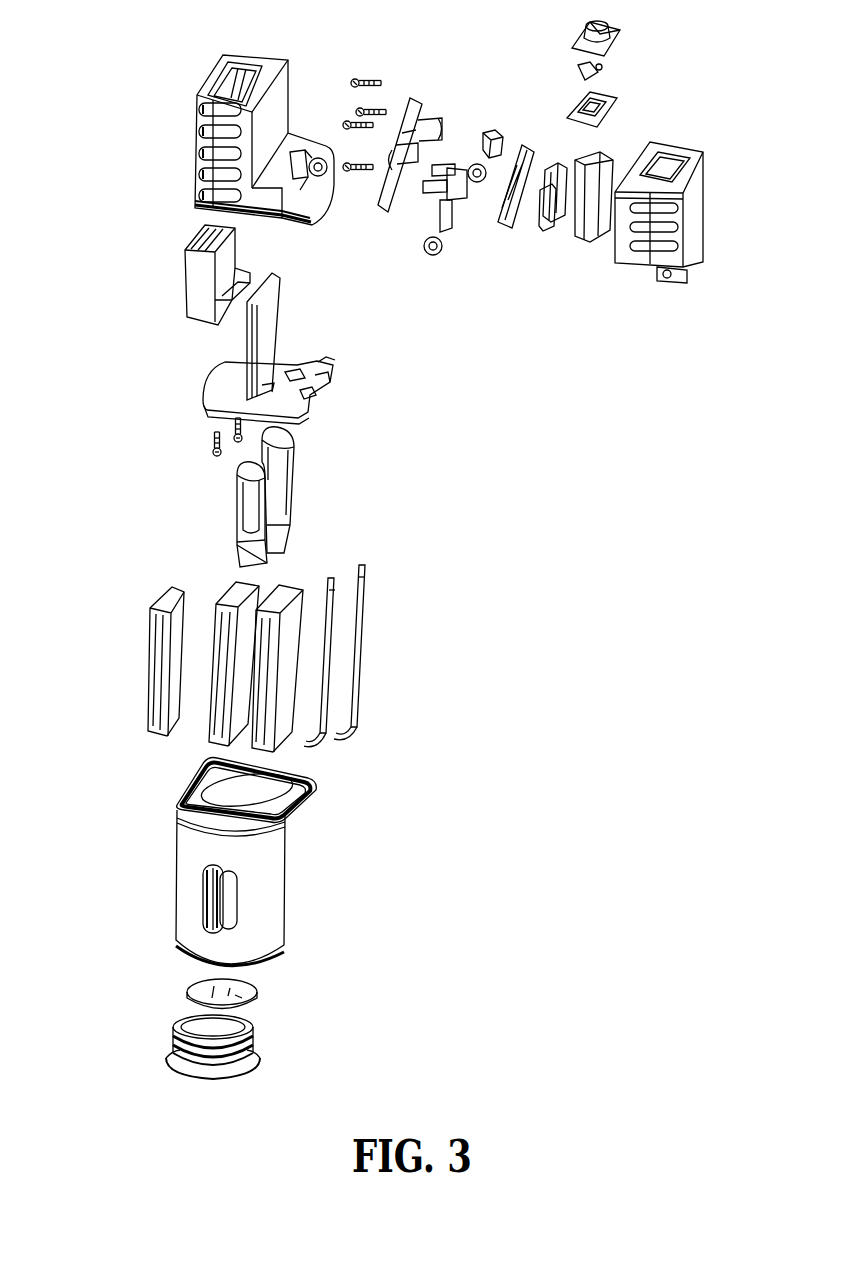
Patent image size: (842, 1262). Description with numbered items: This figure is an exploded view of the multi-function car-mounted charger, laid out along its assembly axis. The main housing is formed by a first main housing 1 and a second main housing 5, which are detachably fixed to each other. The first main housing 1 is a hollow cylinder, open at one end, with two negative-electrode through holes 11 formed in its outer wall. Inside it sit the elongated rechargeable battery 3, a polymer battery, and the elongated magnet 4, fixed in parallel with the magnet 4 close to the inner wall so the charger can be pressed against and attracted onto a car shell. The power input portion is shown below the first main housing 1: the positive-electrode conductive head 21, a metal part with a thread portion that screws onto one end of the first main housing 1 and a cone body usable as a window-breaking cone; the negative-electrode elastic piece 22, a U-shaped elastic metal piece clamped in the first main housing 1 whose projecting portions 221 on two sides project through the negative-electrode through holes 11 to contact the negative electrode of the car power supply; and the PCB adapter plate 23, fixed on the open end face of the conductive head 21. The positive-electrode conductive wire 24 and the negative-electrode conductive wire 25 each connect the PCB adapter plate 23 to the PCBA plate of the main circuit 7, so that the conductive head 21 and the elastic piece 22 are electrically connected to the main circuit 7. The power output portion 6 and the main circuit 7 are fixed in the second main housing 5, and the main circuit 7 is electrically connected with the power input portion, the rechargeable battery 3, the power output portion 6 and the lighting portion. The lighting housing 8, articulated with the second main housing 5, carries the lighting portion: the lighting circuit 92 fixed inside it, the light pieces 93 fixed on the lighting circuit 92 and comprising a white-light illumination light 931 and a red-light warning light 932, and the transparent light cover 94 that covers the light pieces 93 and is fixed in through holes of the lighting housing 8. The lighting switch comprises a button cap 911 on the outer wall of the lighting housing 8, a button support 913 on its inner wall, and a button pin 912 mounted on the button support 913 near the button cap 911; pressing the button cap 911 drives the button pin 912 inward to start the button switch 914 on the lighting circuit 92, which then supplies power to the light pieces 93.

The first main housing 1 is at (180, 877).
The negative-electrode through holes 11 is at (240, 897).
The positive-electrode conductive head 21 is at (175, 1038).
The negative-electrode elastic piece 22 is at (240, 548).
The projecting portions 221 is at (266, 503).
The PCB adapter plate 23 is at (195, 992).
The positive-electrode conductive wire 24 is at (361, 702).
The negative-electrode conductive wire 25 is at (336, 638).
The rechargeable battery 3 is at (263, 608).
The magnet 4 is at (155, 685).
The second main housing 5 is at (196, 160).
The power output portion 6 is at (190, 262).
The main circuit 7 is at (262, 355).
The lighting housing 8 is at (697, 214).
The lighting circuit 92 is at (513, 227).
The light pieces 93 is at (470, 209).
The light cover 94 is at (604, 167).
The button cap 911 is at (616, 19).
The button pin 912 is at (600, 70).
The button support 913 is at (610, 100).
The button switch 914 is at (493, 131).
The white-light illumination light 931 is at (559, 158).
The red-light warning light 932 is at (550, 186).